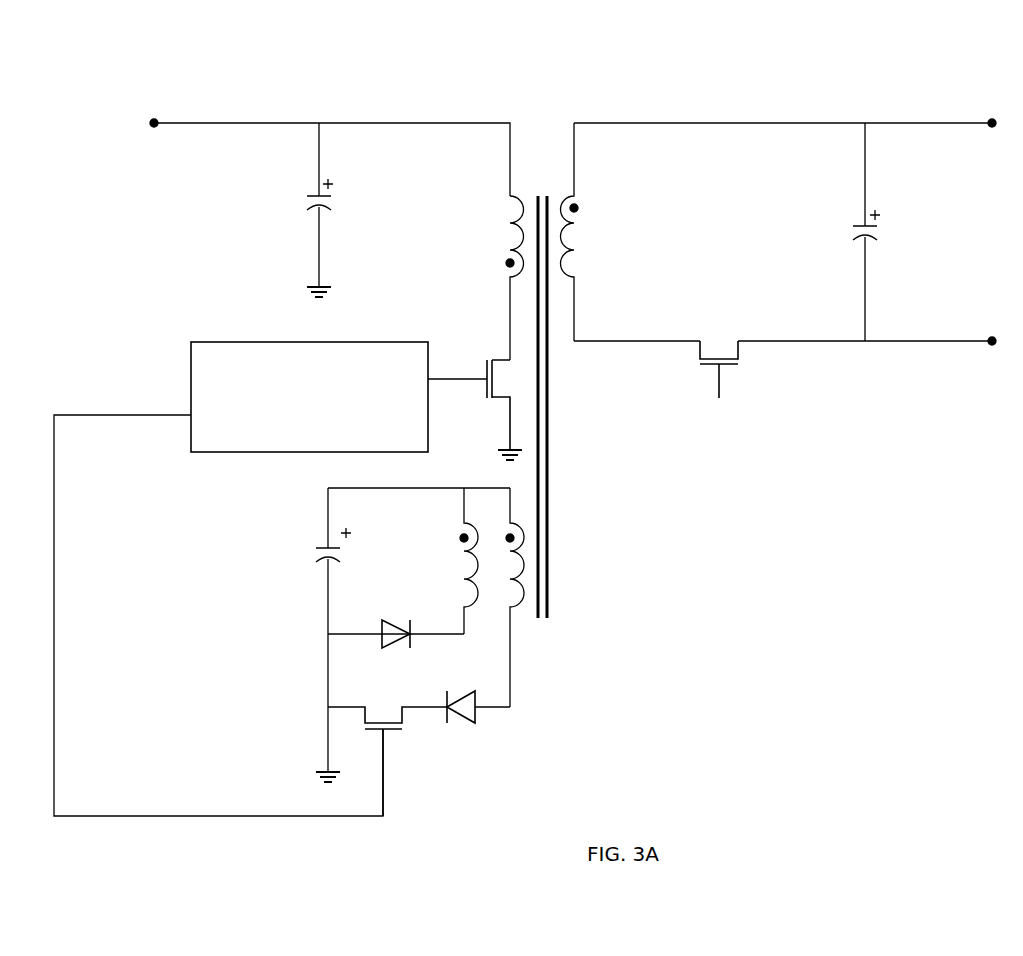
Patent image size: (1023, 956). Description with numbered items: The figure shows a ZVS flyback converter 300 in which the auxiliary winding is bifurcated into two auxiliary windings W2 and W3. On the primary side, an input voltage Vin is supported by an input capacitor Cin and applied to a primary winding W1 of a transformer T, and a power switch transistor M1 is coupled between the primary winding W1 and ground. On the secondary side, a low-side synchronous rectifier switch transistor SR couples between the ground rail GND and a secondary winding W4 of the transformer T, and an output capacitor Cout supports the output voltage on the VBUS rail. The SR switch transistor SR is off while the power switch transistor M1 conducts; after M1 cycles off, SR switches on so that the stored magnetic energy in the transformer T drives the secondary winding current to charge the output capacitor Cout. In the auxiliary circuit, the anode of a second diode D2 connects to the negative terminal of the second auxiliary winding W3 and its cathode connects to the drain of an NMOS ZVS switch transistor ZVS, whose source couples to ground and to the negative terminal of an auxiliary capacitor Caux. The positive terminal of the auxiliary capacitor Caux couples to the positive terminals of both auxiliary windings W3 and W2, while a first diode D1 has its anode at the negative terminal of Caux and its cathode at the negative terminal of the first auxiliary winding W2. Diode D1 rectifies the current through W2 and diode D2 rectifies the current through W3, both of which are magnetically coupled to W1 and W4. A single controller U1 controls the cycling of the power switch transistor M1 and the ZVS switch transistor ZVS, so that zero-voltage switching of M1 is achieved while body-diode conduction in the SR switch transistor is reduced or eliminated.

The ZVS flyback converter 300 is at (428, 58).
The input voltage Vin is at (330, 144).
The input capacitor Cin is at (345, 210).
The transformer T is at (542, 365).
The primary winding W1 is at (493, 278).
The secondary winding W4 is at (590, 232).
The output voltage rail VBUS is at (793, 110).
The output capacitor Cout is at (896, 232).
The ground rail GND is at (793, 328).
The synchronous rectifier switch transistor SR is at (719, 370).
The controller U1 is at (241, 579).
The power switch transistor M1 is at (475, 410).
The auxiliary capacitor Caux is at (375, 635).
The first auxiliary winding W2 is at (450, 561).
The second auxiliary winding W3 is at (547, 597).
The first diode D1 is at (396, 621).
The second diode D2 is at (478, 695).
The NMOS ZVS switch transistor ZVS is at (387, 747).